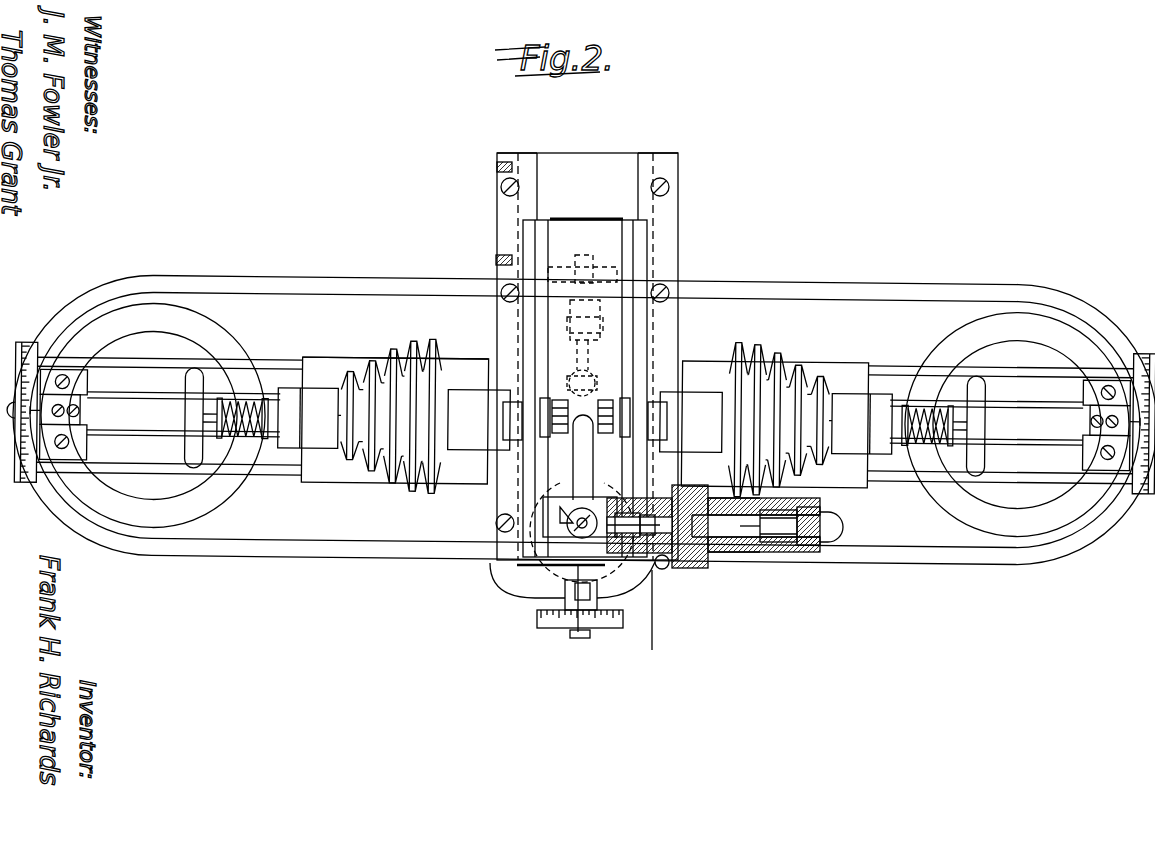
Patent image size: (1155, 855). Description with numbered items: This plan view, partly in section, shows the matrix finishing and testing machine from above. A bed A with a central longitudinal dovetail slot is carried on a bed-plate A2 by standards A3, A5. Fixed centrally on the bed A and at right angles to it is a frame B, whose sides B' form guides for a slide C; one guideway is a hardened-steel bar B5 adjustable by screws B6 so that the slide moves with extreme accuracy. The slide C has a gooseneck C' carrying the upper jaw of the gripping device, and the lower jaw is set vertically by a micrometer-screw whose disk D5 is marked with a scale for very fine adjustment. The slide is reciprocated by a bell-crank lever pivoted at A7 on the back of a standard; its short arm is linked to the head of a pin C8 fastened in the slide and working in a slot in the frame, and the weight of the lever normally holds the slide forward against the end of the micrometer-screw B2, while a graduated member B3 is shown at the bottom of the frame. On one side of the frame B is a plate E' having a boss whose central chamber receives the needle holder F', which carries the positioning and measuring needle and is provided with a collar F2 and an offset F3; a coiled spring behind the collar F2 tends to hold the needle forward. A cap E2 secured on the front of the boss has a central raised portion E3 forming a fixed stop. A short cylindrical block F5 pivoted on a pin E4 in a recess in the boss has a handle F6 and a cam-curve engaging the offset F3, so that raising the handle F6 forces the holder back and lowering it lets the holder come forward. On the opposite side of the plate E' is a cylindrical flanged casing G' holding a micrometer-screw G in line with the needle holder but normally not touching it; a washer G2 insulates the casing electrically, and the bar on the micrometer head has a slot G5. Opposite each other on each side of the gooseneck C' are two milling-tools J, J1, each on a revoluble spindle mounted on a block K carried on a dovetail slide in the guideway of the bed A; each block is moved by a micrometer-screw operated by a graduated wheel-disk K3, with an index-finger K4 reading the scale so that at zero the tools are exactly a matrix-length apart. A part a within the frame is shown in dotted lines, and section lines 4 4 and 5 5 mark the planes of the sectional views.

The bed A is at (128, 457).
The bed-plate A2 is at (357, 527).
The standard A3 is at (325, 486).
The standard A5 is at (972, 530).
The pivot A7 is at (683, 268).
The frame B is at (578, 368).
The sides of frame B' is at (584, 206).
The micrometer-screw B2 is at (510, 577).
The graduated scale B3 is at (545, 612).
The hardened-steel bar B5 is at (515, 156).
The screws B6 is at (498, 258).
The slide C is at (663, 298).
The gooseneck C' is at (516, 476).
The pin C8 is at (657, 348).
The disk D5 is at (490, 558).
The plate E' is at (762, 564).
The cap E2 is at (593, 553).
The central raised portion E3 is at (607, 463).
The pin E4 is at (668, 567).
The offset F3 is at (712, 470).
The needle holder F' is at (762, 569).
The collar F2 is at (627, 493).
The cylindrical block F5 is at (640, 617).
The handle F6 is at (650, 607).
The adjusting rod G is at (767, 562).
The cylindrical flanged casing G' is at (778, 571).
The washer G2 is at (760, 498).
The slot G5 is at (813, 548).
The milling-tool J is at (607, 407).
The milling-tool J1 is at (547, 410).
The block K is at (332, 347).
The wheel-disk K3 is at (1143, 492).
The index-finger K4 is at (47, 413).
The gear a is at (593, 370).
The section line 4 is at (603, 142).
The section line 5 is at (660, 145).